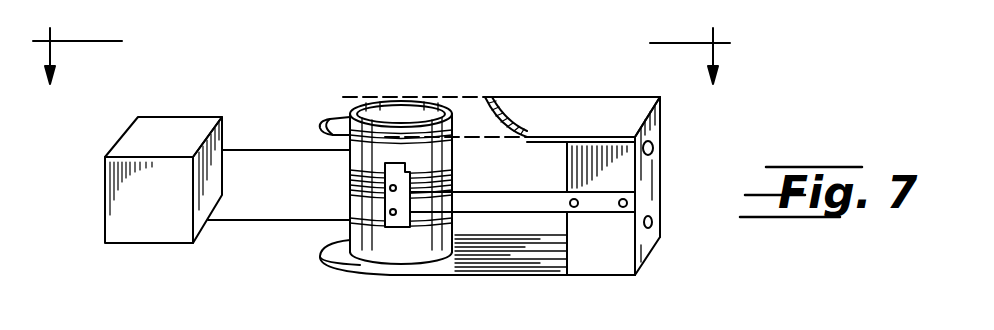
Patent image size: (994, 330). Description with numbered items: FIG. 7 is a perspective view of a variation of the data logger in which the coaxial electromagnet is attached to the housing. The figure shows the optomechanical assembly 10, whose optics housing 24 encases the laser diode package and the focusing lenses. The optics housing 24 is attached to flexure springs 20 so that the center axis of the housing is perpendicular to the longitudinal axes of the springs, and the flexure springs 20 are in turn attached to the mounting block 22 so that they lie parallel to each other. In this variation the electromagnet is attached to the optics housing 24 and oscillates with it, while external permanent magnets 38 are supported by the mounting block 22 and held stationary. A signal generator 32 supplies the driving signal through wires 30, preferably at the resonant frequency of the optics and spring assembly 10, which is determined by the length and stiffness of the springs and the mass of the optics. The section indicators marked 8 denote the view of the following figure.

The section line 8- 8 is at (385, 47).
The optomechanical assembly 10 is at (300, 250).
The flexure springs 20 is at (577, 115).
The mounting block 22 is at (650, 196).
The optics housing 24 is at (318, 118).
The wires 30 is at (250, 150).
The signal generator 32 is at (128, 127).
The permanent magnets 38 is at (454, 155).